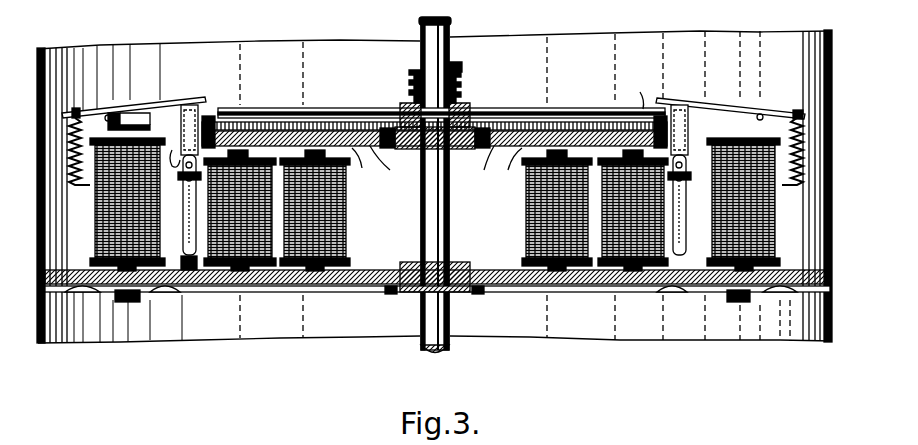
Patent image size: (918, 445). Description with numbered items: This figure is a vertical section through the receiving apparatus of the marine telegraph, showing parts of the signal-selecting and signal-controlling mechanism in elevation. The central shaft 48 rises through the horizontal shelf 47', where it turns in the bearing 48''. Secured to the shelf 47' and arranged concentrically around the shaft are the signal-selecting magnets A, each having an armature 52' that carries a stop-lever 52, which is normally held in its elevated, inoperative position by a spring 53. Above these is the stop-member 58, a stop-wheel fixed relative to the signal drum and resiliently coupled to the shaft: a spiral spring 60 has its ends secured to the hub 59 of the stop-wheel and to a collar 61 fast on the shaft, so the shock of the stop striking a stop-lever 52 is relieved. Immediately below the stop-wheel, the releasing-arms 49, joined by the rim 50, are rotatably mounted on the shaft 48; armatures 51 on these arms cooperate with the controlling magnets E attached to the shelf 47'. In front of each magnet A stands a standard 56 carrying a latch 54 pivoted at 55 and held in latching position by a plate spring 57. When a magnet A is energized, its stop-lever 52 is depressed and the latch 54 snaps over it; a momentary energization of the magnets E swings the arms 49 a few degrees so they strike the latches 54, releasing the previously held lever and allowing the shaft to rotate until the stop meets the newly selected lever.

The central shaft 48 is at (451, 185).
The stop-member 58 is at (441, 95).
The rim 50 is at (210, 124).
The spiral spring 60 is at (408, 87).
The collar 61 is at (462, 66).
The hub 59 is at (468, 106).
The stop-lever 52 is at (433, 86).
The armature 52' is at (129, 72).
The latch 54 is at (174, 105).
The spring 53 is at (72, 162).
The position-controlling or signal-selecting magnet A is at (97, 222).
The controlling magnet E is at (343, 227).
The armature 51 is at (437, 169).
The releasing-arm 49 is at (432, 169).
The plate spring 57 is at (190, 213).
The pivot 55 is at (173, 156).
The standard 56 is at (186, 272).
The horizontal shelf 47' is at (437, 293).
The bearing 48'' is at (444, 264).